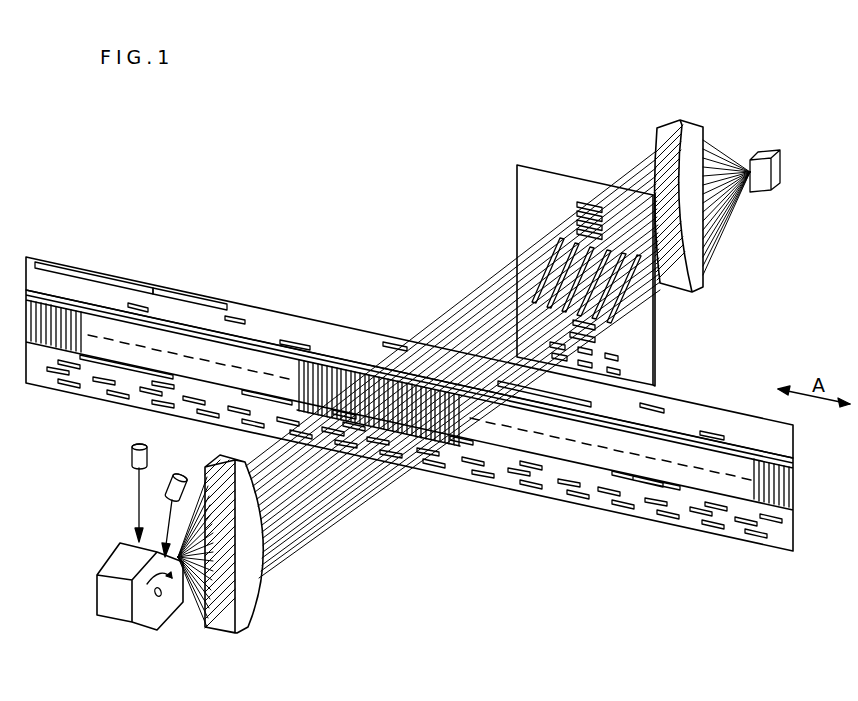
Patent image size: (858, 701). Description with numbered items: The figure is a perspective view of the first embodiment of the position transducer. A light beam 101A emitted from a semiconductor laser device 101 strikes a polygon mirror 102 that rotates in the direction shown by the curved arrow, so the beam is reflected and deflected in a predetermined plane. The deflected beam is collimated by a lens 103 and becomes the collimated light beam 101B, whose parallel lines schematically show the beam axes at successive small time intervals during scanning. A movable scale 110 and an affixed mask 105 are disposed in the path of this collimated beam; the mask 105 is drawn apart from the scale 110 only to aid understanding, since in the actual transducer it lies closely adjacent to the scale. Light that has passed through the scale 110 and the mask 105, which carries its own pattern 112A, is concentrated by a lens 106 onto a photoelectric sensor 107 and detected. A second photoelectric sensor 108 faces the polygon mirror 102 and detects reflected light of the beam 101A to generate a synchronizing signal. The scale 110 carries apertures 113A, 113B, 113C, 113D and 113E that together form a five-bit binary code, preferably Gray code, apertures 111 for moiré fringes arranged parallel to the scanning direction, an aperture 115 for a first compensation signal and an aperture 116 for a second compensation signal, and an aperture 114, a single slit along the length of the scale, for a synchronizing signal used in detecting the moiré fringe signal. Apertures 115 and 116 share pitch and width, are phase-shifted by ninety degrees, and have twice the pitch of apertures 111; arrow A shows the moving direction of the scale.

The semiconductor laser device 101 is at (132, 456).
The light beam 101A is at (137, 500).
The collimated light beam 101B is at (325, 530).
The polygon mirror 102 is at (167, 607).
The lens 103 is at (228, 633).
The affixed mask 105 is at (525, 213).
The lens 106 is at (700, 255).
The photoelectric sensor 107 is at (783, 180).
The photoelectric sensor 108 is at (174, 477).
The movable scale 110 is at (785, 540).
The apertures for moiré fringes 111 is at (461, 422).
The index pattern 112A is at (615, 294).
The aperture 113A is at (192, 298).
The aperture 113B is at (242, 318).
The aperture 113C is at (133, 305).
The aperture 113D is at (502, 440).
The aperture 113E is at (551, 463).
The aperture for synchronizing signal 114 is at (723, 443).
The aperture for first compensation signal 115 is at (605, 491).
The aperture for second compensation signal 116 is at (668, 519).